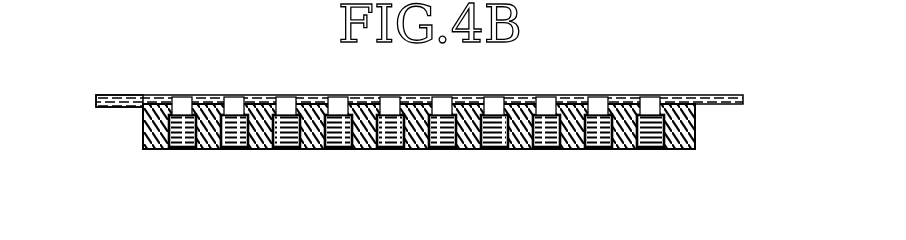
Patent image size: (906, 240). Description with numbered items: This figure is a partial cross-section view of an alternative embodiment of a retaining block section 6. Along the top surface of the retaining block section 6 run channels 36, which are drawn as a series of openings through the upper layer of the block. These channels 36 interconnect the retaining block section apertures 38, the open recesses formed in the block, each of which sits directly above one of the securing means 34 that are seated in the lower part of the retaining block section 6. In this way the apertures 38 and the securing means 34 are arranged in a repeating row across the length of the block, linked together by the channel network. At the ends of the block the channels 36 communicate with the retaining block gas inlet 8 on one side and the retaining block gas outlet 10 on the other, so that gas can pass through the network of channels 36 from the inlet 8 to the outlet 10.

The retaining block section 6 is at (696, 137).
The retaining block gas inlet 8 is at (745, 95).
The retaining block gas outlet 10 is at (106, 108).
The securing means 34 is at (223, 150).
The channels 36 is at (572, 95).
The retaining block section apertures 38 is at (187, 97).